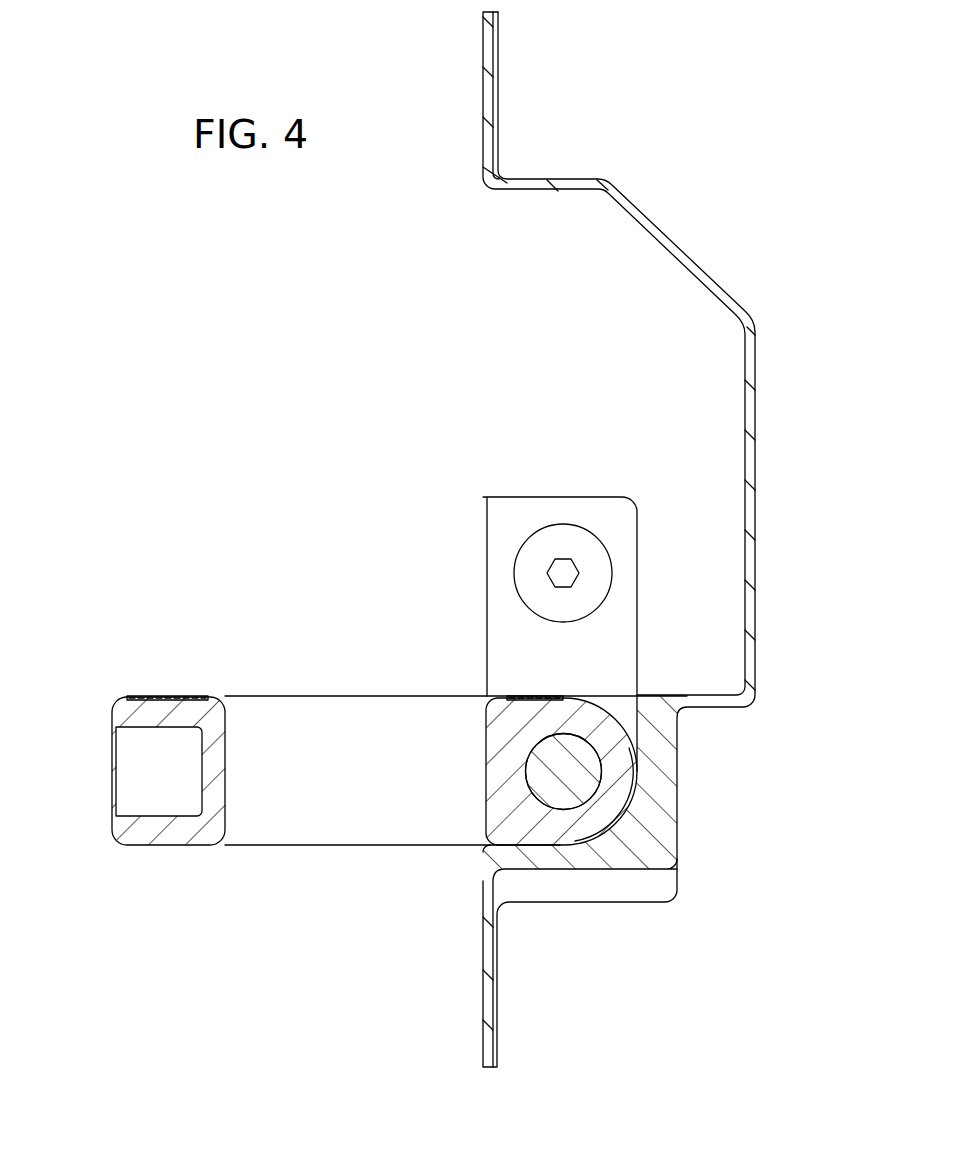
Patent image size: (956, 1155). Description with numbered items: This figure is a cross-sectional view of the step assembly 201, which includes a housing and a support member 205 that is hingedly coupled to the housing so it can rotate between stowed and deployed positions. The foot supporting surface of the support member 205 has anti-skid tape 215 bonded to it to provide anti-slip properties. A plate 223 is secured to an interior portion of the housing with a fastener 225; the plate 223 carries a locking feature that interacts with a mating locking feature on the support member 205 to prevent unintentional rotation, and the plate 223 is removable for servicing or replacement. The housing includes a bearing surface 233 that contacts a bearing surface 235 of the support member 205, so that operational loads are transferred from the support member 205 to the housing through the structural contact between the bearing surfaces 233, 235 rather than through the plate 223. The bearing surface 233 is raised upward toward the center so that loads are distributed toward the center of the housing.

The step assembly 201 is at (180, 400).
The support member 205 is at (162, 856).
The anti-skid tape 215 is at (167, 696).
The plate 223 is at (597, 515).
The fastener 225 is at (543, 608).
The bearing surface 233 is at (534, 843).
The bearing surface 235 is at (548, 845).